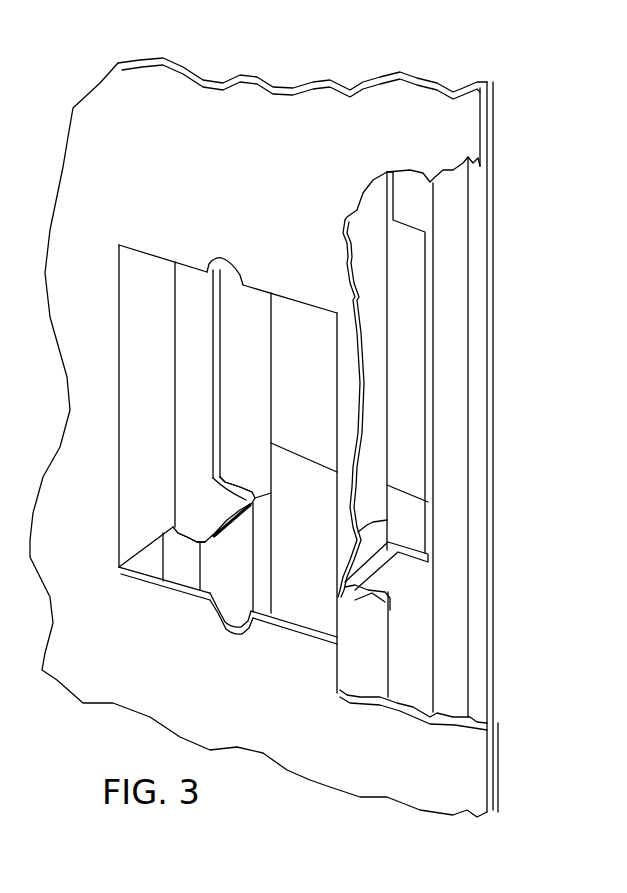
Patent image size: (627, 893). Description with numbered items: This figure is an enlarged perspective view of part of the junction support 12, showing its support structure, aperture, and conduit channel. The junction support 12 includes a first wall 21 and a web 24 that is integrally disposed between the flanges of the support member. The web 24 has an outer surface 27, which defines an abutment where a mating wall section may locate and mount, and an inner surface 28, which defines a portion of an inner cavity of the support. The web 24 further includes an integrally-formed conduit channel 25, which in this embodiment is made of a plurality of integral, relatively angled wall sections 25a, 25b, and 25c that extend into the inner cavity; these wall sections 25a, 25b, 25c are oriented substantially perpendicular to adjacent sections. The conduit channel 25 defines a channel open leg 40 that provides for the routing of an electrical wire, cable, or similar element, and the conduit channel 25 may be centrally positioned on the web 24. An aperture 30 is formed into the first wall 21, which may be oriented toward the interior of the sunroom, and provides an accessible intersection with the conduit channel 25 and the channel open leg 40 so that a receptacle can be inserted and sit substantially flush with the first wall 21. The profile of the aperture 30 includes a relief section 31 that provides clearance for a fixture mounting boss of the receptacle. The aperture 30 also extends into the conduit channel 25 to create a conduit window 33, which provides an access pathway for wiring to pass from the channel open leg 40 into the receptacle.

The junction support 12 is at (346, 63).
The first wall 21 is at (178, 174).
The web 24 is at (217, 435).
The conduit channel 25 is at (204, 506).
The wall section 25a is at (183, 542).
The wall section 25b is at (226, 521).
The wall section 25c is at (250, 481).
The outer surface 27 is at (382, 666).
The inner surface 28 is at (155, 333).
The aperture 30 is at (141, 615).
The relief section 31 is at (223, 260).
The conduit window 33 is at (196, 380).
The channel open leg 40 is at (404, 592).